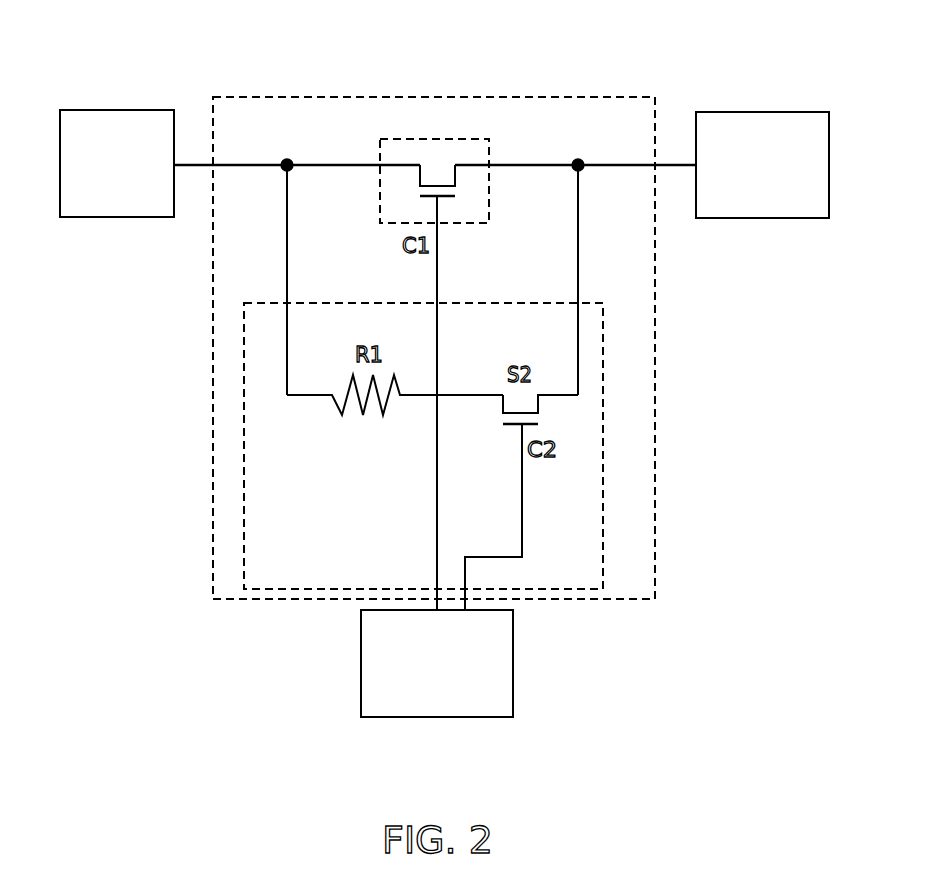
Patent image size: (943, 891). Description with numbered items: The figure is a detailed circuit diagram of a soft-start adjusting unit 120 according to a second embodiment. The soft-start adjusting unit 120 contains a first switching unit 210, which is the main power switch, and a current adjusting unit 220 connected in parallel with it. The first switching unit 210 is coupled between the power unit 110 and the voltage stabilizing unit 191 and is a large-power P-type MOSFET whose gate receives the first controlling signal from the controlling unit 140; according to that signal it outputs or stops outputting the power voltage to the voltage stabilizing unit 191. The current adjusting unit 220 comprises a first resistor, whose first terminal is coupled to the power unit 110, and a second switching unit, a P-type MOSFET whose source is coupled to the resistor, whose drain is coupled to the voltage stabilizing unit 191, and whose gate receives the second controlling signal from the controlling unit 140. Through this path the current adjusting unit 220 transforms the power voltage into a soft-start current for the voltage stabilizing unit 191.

The power unit 110 is at (117, 110).
The soft-start adjusting unit 120 is at (467, 97).
The voltage stabilizing unit 191 is at (748, 112).
The first switching unit 210 is at (490, 147).
The current adjusting unit 220 is at (587, 300).
The controlling unit 140 is at (513, 652).